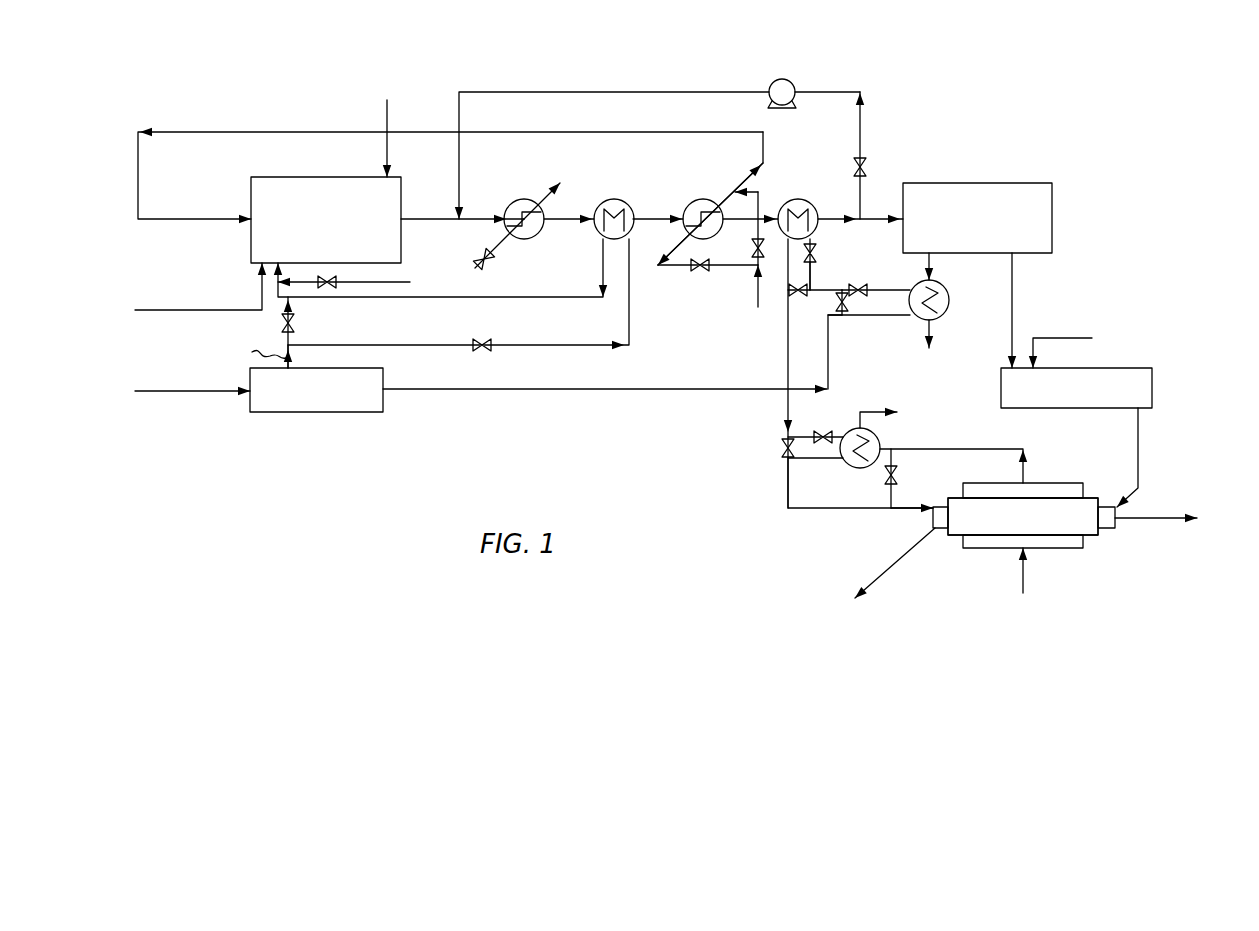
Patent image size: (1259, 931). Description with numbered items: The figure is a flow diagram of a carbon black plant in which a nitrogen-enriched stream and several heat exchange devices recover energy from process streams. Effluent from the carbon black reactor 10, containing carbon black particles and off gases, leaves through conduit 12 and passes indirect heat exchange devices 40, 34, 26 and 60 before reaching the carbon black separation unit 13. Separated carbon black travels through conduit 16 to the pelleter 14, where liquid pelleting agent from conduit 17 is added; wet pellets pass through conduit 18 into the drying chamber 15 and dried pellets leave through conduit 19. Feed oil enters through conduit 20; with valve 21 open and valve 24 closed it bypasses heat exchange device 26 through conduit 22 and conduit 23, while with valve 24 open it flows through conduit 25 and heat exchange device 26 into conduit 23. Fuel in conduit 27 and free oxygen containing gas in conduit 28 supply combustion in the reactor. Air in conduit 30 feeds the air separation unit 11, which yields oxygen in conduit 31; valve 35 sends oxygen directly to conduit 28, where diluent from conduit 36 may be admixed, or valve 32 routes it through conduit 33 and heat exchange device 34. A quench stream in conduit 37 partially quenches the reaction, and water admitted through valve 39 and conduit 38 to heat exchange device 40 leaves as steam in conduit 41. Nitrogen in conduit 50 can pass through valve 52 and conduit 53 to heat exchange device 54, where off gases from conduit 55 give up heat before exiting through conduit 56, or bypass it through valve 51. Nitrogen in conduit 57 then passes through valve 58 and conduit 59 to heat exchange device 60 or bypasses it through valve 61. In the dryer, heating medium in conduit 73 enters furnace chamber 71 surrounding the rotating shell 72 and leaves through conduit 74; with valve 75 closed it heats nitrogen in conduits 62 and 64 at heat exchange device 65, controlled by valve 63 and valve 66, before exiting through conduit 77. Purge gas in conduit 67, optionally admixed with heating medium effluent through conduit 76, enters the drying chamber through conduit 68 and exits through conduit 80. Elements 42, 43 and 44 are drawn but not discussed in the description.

The carbon black reactor 10 is at (236, 185).
The air separation unit 11 is at (330, 420).
The conduit 12 is at (424, 218).
The carbon black separation system 13 is at (991, 176).
The pelleter 14 is at (1162, 369).
The drying chamber 15 is at (1081, 477).
The conduit 16 is at (1014, 296).
The conduit 17 is at (1068, 337).
The conduit 18 is at (1141, 440).
The conduit 19 is at (850, 576).
The conduit 20 is at (757, 300).
The valve 21 is at (754, 250).
The conduit 22 is at (760, 200).
The conduit 23 is at (665, 134).
The valve 24 is at (697, 275).
The conduit 25 is at (668, 255).
The heat exchange device 26 is at (704, 200).
The conduit 27 is at (158, 310).
The conduit 28 is at (295, 326).
The conduit 30 is at (158, 396).
The conduit 31 is at (292, 364).
The valve 32 is at (483, 342).
The conduit 33 is at (538, 344).
The heat exchange device 34 is at (640, 191).
The valve 35 is at (296, 339).
The conduit 36 is at (356, 282).
The conduit 37 is at (386, 110).
The conduit 38 is at (474, 266).
The valve 39 is at (482, 254).
The heat exchange device 40 is at (518, 200).
The conduit 41 is at (552, 198).
The valve 42 is at (868, 168).
The conduit 43 is at (862, 122).
The blower 44 is at (794, 86).
The conduit 50 is at (484, 392).
The valve 51 is at (847, 316).
The valve 52 is at (852, 286).
The conduit 53 is at (878, 318).
The heat exchange device 54 is at (950, 300).
The conduit 55 is at (940, 263).
The conduit 56 is at (940, 332).
The conduit 57 is at (826, 322).
The valve 58 is at (818, 260).
The conduit 59 is at (814, 274).
The heat exchange device 60 is at (810, 204).
The valve 61 is at (800, 300).
The conduit 62 is at (786, 364).
The valve 63 is at (822, 431).
The conduit 64 is at (804, 460).
The indirect heat exchange device 65 is at (846, 428).
The valve 66 is at (782, 448).
The conduit 67 is at (785, 500).
The conduit 68 is at (901, 508).
The furnace chamber 71 is at (976, 546).
The rotating drum or shell 72 is at (958, 530).
The conduit 73 is at (1026, 574).
The conduit 74 is at (970, 449).
The valve 75 is at (886, 486).
The conduit 76 is at (895, 470).
The conduit 77 is at (875, 408).
The conduit 80 is at (1148, 522).